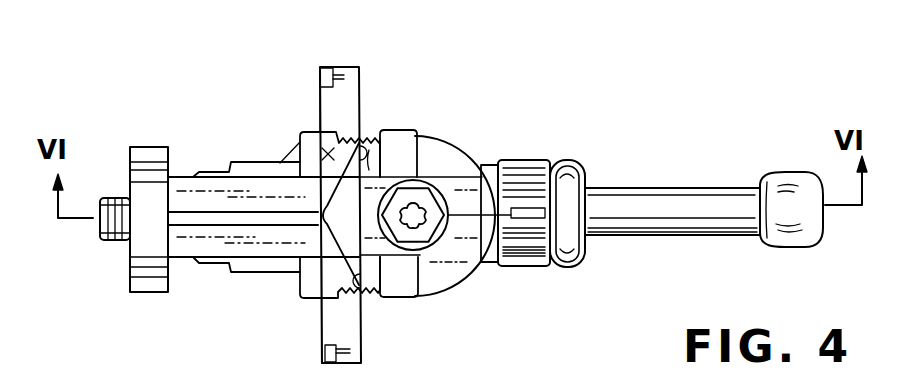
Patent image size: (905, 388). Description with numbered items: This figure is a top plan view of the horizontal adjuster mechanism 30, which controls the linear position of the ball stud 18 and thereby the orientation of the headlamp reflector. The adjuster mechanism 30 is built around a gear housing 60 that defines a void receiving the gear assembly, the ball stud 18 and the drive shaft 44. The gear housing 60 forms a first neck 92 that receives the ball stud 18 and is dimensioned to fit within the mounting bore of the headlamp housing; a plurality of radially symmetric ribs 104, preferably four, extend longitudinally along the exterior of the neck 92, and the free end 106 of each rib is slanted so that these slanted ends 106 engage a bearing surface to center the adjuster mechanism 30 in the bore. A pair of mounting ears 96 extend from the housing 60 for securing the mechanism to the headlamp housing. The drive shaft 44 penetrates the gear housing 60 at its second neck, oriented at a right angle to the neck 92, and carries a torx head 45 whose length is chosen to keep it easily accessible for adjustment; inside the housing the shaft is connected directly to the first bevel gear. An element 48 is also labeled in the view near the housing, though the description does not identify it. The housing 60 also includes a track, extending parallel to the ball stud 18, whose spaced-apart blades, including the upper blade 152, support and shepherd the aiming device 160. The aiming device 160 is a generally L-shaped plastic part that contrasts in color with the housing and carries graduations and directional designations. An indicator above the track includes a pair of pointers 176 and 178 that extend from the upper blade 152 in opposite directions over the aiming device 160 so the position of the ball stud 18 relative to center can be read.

The ball stud 18 is at (667, 188).
The adjuster mechanism 30 is at (489, 78).
The drive shaft 44 is at (422, 191).
The torx head 45 is at (418, 184).
The pawl wedge 48 is at (320, 207).
The gear housing 60 is at (435, 303).
The first neck 92 is at (326, 355).
The mounting ears 96 is at (358, 97).
The ribs 104 is at (532, 158).
The slanted free end 106 is at (551, 168).
The upper blade 152 is at (197, 192).
The aiming device 160 is at (152, 298).
The pointer 176 is at (318, 134).
The pointer 178 is at (352, 258).